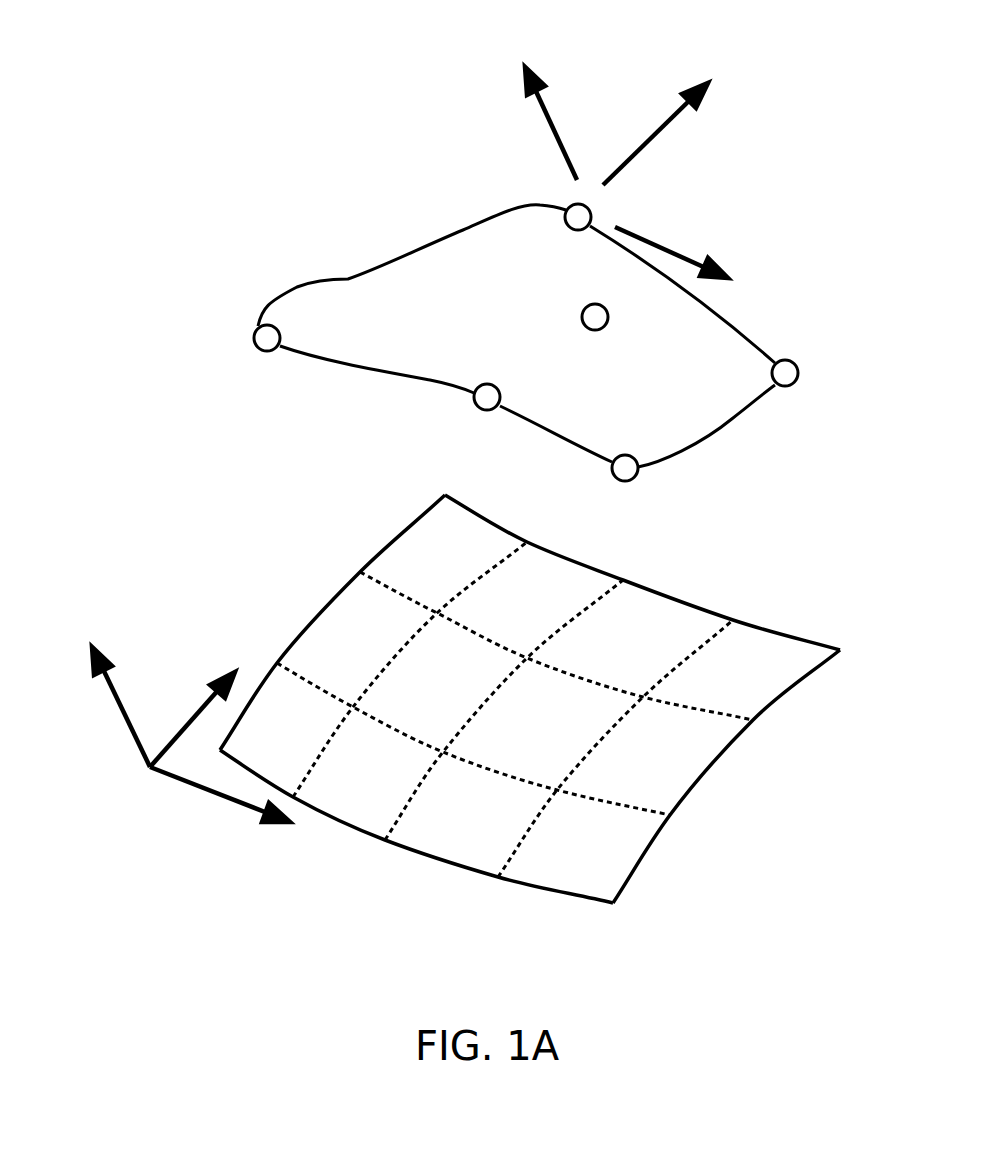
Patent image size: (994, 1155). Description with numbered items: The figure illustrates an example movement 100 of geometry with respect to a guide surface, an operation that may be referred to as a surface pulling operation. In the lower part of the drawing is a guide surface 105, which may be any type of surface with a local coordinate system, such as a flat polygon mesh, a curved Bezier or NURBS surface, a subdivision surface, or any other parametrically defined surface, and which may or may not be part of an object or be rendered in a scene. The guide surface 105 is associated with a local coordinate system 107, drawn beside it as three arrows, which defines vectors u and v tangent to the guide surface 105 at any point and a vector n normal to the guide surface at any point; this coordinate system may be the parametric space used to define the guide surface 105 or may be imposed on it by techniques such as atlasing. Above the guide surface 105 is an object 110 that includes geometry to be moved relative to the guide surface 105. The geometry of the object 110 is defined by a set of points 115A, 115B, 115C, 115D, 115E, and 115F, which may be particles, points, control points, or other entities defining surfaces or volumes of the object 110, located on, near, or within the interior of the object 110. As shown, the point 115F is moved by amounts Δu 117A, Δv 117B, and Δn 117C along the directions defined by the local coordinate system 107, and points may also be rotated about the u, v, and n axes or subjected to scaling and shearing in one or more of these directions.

The movement 100 is at (294, 47).
The guide surface 105 is at (587, 901).
The local coordinate system 107 is at (197, 792).
The object 110 is at (348, 279).
The point 115A is at (263, 352).
The point 115B is at (475, 406).
The point 115C is at (635, 481).
The point 115D is at (797, 383).
The point 115E is at (606, 327).
The point 115F is at (567, 208).
The Δu 117A is at (719, 274).
The Δv 117B is at (692, 113).
The Δn 117C is at (511, 110).